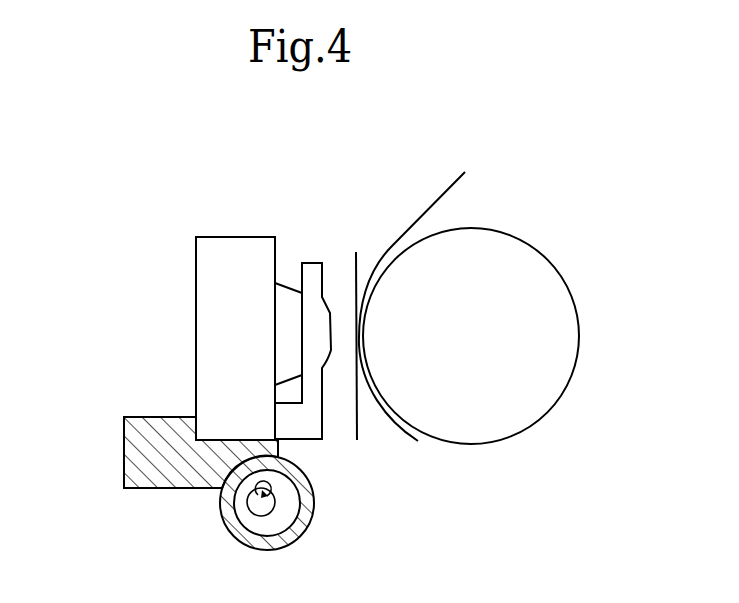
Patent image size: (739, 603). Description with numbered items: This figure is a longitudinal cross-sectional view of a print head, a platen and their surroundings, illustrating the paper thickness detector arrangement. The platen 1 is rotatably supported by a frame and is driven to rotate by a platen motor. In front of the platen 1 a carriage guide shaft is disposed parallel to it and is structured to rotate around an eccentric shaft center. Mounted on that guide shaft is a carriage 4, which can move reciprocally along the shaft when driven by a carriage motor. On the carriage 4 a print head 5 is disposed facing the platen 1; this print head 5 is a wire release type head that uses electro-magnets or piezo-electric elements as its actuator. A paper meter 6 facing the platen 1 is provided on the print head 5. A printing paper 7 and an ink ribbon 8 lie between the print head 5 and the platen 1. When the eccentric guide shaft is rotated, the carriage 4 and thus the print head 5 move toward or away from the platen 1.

The platen 1 is at (562, 277).
The carriage 4 is at (124, 444).
The print head 5 is at (232, 236).
The paper meter 6 is at (310, 262).
The printing paper 7 is at (443, 193).
The ink ribbon 8 is at (358, 432).